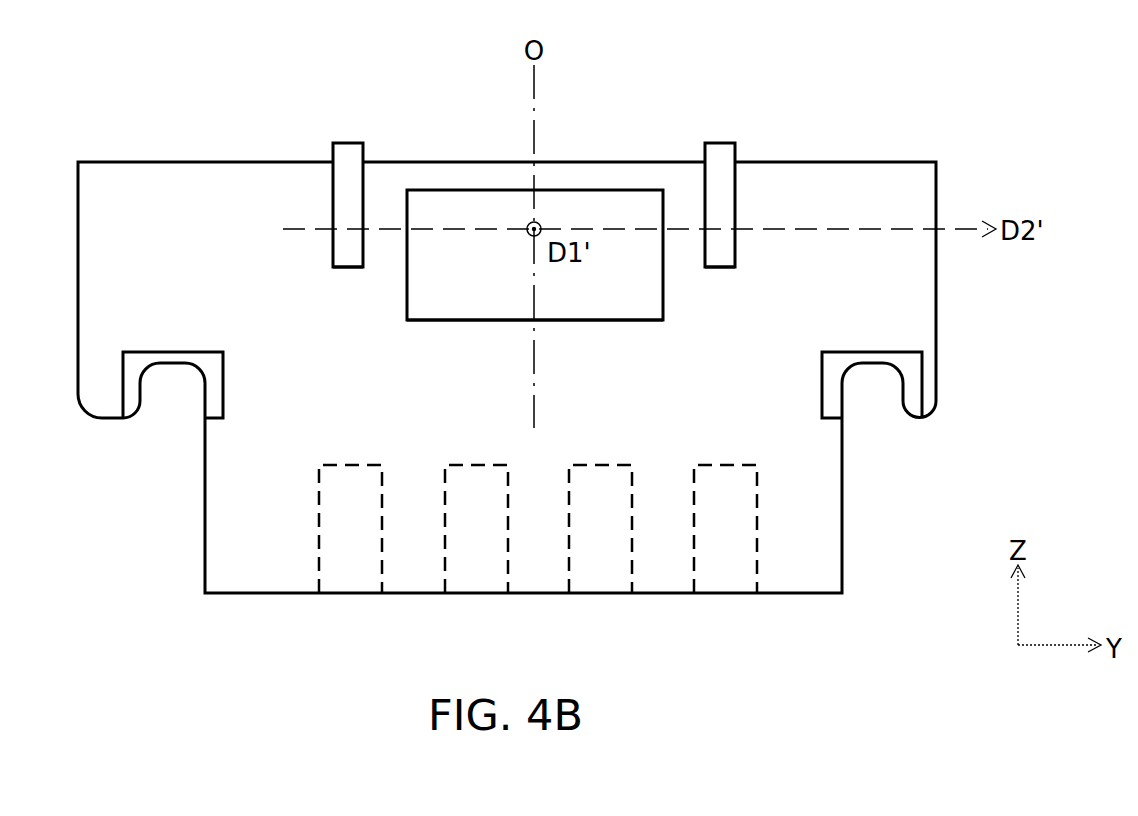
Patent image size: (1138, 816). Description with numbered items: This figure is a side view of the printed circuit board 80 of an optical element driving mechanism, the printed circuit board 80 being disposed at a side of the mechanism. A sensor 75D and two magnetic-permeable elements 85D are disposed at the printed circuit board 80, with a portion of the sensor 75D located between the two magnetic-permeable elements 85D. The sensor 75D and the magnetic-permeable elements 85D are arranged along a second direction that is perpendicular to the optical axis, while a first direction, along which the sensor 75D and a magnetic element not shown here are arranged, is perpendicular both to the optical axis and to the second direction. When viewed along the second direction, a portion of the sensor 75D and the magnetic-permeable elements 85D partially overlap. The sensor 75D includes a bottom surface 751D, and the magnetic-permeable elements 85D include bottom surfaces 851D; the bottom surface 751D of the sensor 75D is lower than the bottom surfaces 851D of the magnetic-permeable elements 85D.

The printed circuit board 80 is at (810, 514).
The sensor 75D is at (447, 210).
The bottom surface 751D is at (597, 322).
The magnetic-permeable elements 85D is at (348, 172).
The bottom surfaces 851D is at (348, 270).